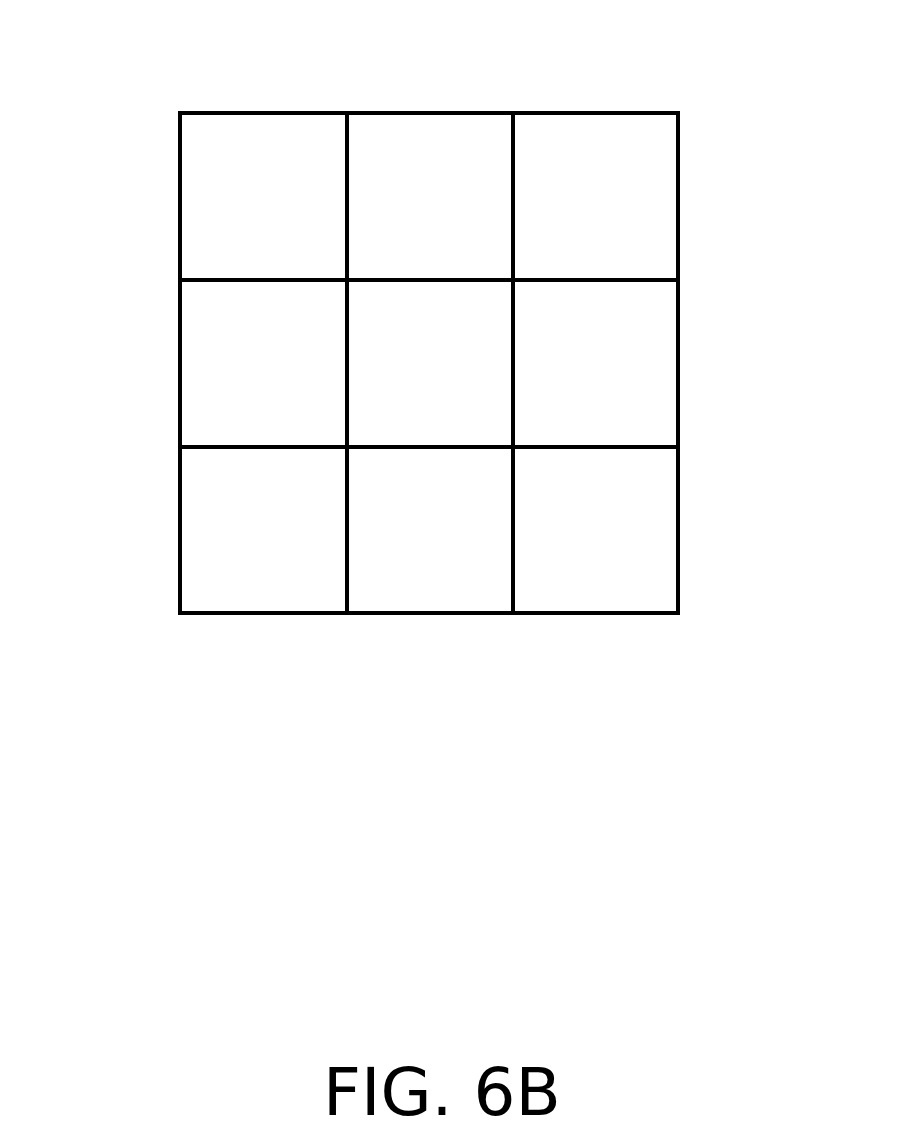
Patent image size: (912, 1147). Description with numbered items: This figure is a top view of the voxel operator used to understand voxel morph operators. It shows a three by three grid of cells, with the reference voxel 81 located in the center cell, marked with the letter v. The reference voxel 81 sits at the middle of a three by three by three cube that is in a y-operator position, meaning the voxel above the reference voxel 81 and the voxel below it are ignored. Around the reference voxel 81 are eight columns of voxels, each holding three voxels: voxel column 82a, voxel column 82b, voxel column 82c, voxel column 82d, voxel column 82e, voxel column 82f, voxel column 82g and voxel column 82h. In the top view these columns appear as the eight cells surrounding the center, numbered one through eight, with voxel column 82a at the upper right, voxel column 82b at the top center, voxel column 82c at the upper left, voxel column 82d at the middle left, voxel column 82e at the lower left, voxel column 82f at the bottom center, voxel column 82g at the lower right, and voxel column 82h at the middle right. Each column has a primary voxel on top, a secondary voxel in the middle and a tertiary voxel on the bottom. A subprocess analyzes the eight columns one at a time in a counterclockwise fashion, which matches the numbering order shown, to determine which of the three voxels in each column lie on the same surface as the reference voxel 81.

The reference voxel 81 is at (482, 320).
The voxel column 82a is at (596, 127).
The voxel column 82b is at (428, 127).
The voxel column 82c is at (250, 127).
The voxel column 82d is at (195, 352).
The voxel column 82e is at (195, 521).
The voxel column 82f is at (427, 592).
The voxel column 82g is at (603, 592).
The voxel column 82h is at (662, 367).